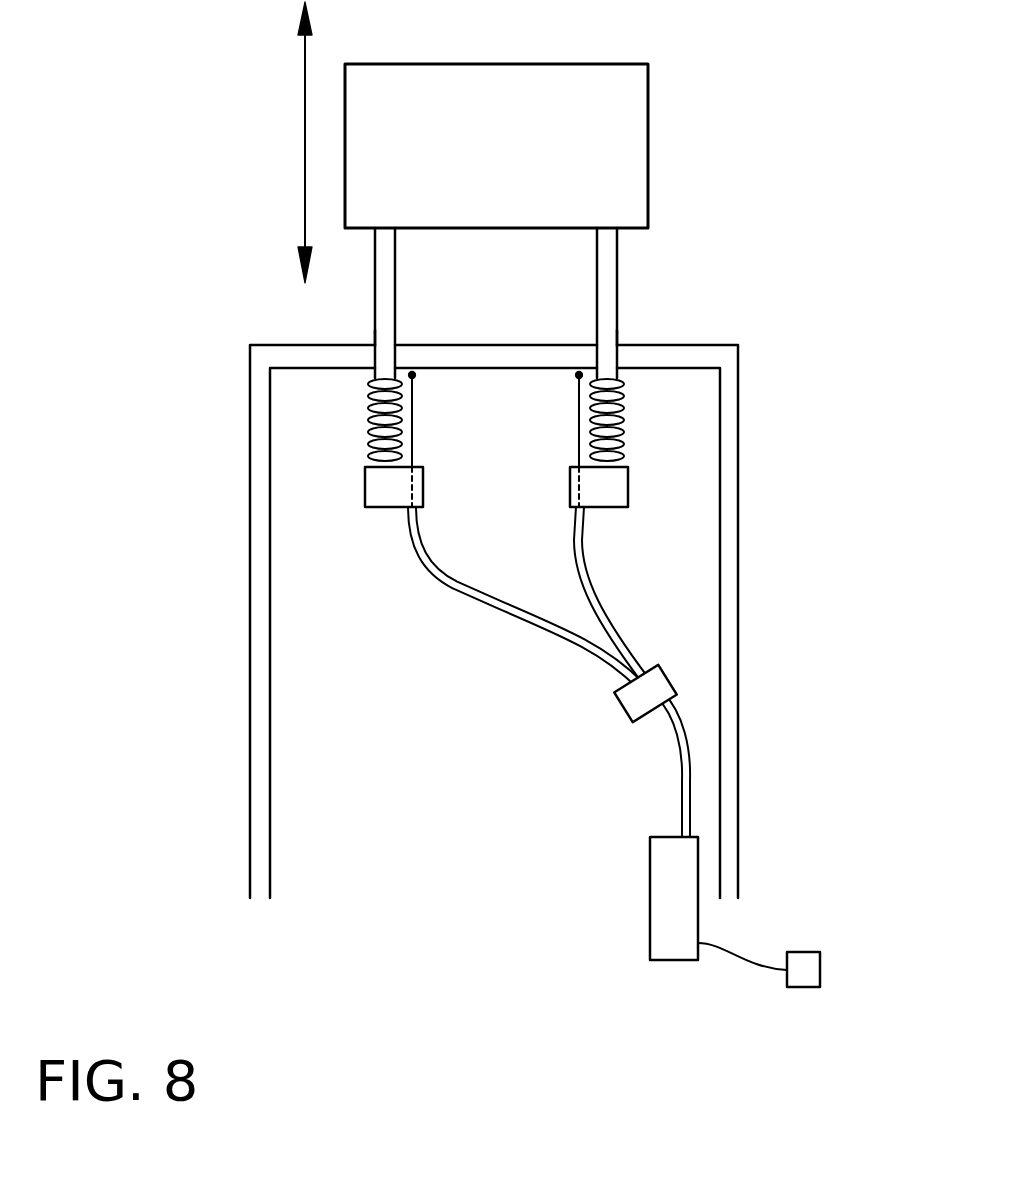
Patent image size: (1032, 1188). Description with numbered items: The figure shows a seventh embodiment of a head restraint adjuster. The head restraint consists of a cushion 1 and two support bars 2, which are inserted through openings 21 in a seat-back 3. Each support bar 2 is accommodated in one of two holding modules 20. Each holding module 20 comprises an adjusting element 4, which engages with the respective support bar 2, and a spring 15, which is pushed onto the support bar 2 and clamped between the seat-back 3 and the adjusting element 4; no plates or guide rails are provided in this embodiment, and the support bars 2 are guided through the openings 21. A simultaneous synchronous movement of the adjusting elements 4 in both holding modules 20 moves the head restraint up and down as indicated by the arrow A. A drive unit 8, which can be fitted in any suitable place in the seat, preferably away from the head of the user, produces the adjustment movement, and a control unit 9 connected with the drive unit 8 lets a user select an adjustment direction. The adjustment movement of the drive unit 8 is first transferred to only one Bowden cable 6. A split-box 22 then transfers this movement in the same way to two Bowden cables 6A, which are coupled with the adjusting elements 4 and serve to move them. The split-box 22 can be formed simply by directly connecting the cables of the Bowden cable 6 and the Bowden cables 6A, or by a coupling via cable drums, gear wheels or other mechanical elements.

The cushion 1 is at (628, 152).
The support bar 2 is at (387, 293).
The seat-back 3 is at (732, 473).
The adjusting element 4 is at (570, 493).
The Bowden cable 6 is at (683, 778).
The Bowden cables 6A is at (542, 618).
The drive unit 8 is at (663, 897).
The control unit 9 is at (807, 965).
The spring 15 is at (370, 443).
The holding module 20 is at (357, 521).
The opening 21 is at (366, 335).
The split-box 22 is at (647, 685).
The arrow A is at (305, 130).